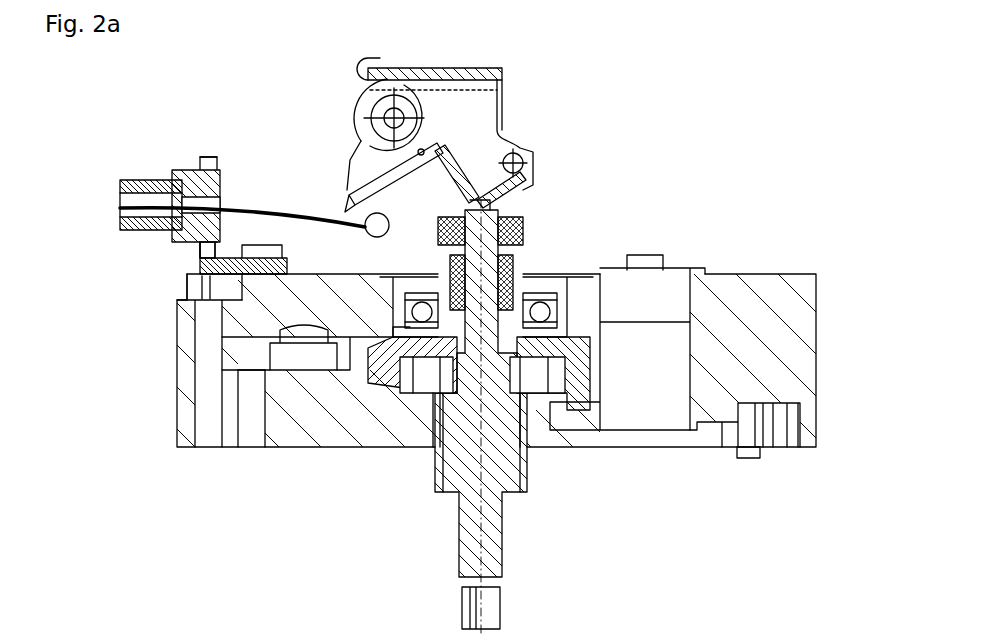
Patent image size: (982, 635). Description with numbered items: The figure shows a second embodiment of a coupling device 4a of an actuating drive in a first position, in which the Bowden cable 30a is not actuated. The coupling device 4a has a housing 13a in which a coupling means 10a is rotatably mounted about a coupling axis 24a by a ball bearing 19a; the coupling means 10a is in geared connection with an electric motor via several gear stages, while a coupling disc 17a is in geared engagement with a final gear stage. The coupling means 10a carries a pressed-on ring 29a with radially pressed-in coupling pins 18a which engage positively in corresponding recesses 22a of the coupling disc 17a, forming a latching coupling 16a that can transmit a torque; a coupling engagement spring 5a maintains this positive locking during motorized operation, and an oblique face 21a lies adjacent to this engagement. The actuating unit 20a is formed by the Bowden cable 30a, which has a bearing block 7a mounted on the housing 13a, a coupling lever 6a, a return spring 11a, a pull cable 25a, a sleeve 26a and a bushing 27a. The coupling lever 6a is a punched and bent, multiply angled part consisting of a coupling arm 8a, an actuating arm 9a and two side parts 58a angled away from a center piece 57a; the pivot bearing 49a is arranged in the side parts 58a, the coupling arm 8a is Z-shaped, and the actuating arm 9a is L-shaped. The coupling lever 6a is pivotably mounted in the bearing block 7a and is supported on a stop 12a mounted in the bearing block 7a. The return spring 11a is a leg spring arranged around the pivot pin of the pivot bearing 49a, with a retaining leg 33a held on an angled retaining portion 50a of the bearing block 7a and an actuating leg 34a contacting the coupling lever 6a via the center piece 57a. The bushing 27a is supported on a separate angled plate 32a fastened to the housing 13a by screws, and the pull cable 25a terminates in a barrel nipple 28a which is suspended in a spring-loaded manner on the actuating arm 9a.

The coupling device 4a is at (692, 103).
The coupling engagement spring 5a is at (505, 245).
The coupling lever 6a is at (458, 140).
The bearing block 7a is at (503, 66).
The coupling arm 8a is at (532, 176).
The actuating arm 9a is at (345, 215).
The coupling means 10a is at (503, 455).
The return spring 11a is at (370, 107).
The stop 12a is at (523, 163).
The housing 13a is at (782, 287).
The latching coupling 16a is at (363, 400).
The coupling disc 17a is at (557, 355).
The coupling pin 18a is at (425, 395).
The ball bearing 19a is at (550, 308).
The actuating unit 20a is at (205, 133).
The oblique face 21a is at (520, 192).
The recess 22a is at (405, 382).
The coupling axis 24a is at (483, 508).
The pull cable 25a is at (237, 212).
The sleeve 26a is at (120, 187).
The bushing 27a is at (183, 240).
The barrel nipple 28a is at (382, 221).
The ring 29a is at (528, 390).
The Bowden cable 30a is at (147, 180).
The angled plate 32a is at (208, 262).
The retaining leg 33a is at (397, 70).
The actuating leg 34a is at (366, 163).
The pivot bearing 49a is at (400, 110).
The retaining portion 50a is at (398, 90).
The center piece 57a is at (421, 152).
The side part 58a is at (363, 130).